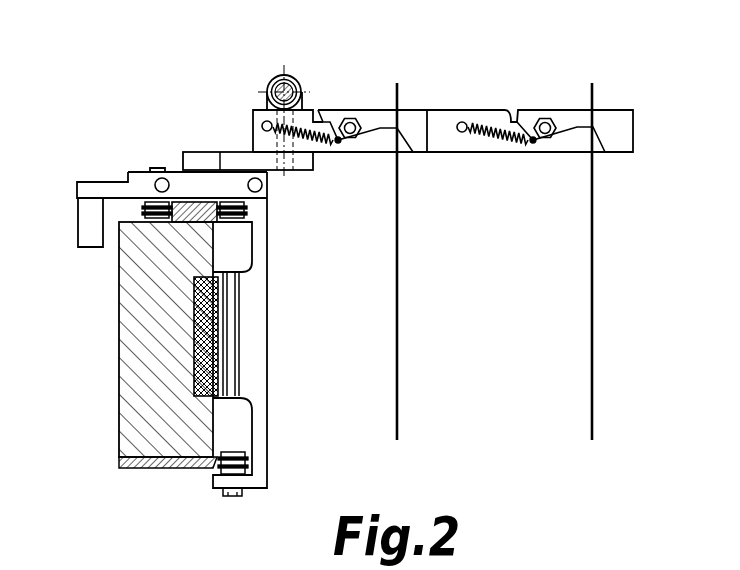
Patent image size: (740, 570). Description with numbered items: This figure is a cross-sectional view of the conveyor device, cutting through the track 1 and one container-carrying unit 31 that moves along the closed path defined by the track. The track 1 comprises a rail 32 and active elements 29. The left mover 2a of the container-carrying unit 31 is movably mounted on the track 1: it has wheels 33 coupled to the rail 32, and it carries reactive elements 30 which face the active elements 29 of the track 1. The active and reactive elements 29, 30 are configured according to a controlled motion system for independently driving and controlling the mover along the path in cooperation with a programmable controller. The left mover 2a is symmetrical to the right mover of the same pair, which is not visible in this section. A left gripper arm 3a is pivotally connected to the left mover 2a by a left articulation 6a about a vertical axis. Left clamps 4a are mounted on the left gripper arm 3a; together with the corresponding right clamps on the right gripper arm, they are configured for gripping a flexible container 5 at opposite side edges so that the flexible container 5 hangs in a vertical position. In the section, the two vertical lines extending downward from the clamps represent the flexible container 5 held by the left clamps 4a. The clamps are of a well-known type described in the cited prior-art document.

The track 1 is at (110, 327).
The left mover 2a is at (280, 300).
The left gripper arm 3a is at (443, 152).
The left clamp 4a is at (367, 113).
The flexible container 5 is at (397, 296).
The left articulation 6a is at (273, 147).
The active elements 29 is at (192, 356).
The reactive elements 30 is at (224, 343).
The container-carrying unit 31 is at (474, 72).
The rail 32 is at (193, 202).
The wheels 33 is at (128, 181).